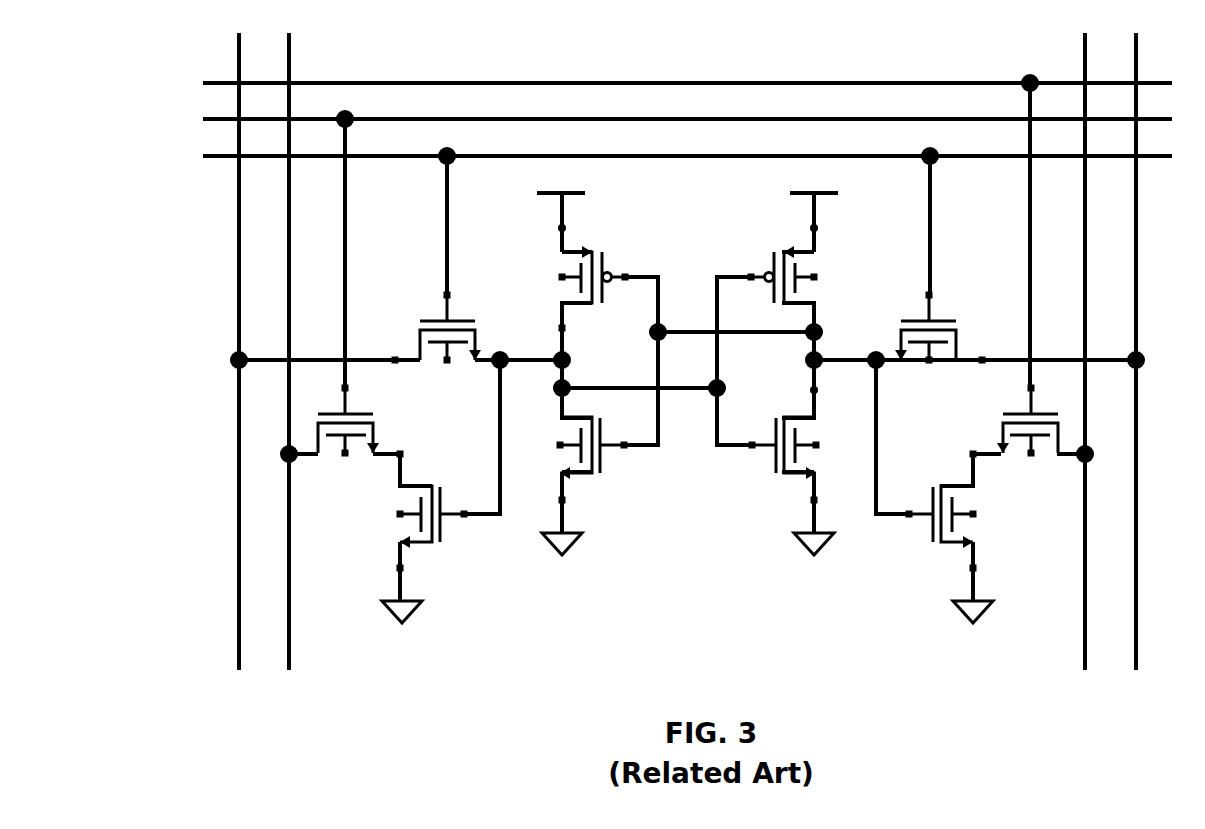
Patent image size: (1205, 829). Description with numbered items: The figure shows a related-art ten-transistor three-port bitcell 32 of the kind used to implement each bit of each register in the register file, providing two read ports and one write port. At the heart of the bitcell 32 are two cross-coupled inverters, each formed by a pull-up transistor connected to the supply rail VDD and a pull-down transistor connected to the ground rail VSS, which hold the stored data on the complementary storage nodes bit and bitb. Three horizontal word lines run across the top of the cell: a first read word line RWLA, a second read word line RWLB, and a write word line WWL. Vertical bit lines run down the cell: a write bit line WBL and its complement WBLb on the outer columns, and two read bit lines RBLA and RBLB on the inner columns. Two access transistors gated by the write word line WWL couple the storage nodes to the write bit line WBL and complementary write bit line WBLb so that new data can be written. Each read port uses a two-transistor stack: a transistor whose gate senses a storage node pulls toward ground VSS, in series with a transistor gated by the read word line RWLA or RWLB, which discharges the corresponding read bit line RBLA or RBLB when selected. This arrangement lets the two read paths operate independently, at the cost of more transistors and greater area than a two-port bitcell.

The ten-transistor (10T) 3-port 2R1W bitcell 32 is at (141, 119).
The read word line A RWLA is at (687, 73).
The read word line B RWLB is at (687, 109).
The write word line WWL is at (687, 146).
The write bit line WBL is at (227, 351).
The complementary write bit line WBLb is at (1149, 351).
The read bit line A RBLA is at (1073, 351).
The read bit line B RBLB is at (302, 351).
The bit storage node bit is at (648, 430).
The complementary bit storage node bitb is at (715, 402).
The supply voltage VDD is at (687, 212).
The ground VSS is at (687, 559).